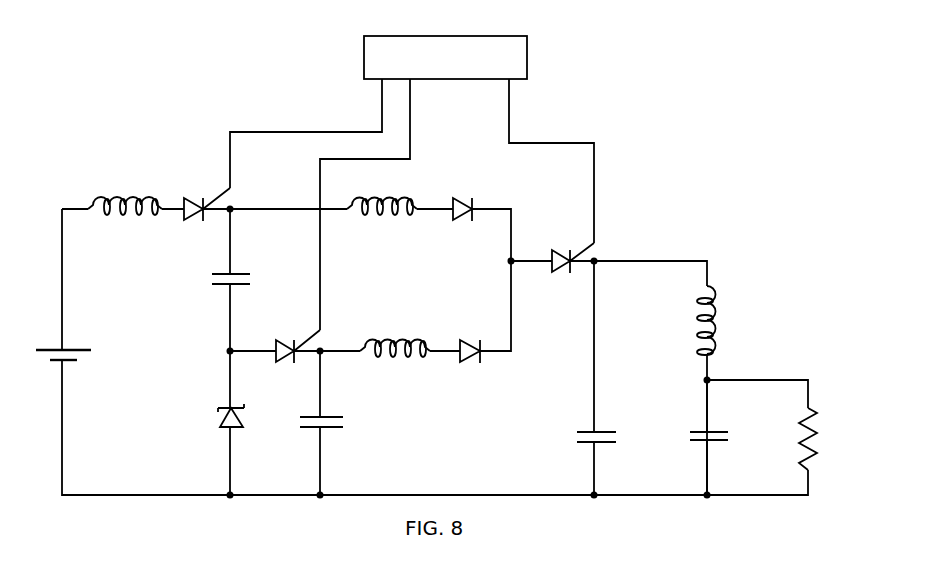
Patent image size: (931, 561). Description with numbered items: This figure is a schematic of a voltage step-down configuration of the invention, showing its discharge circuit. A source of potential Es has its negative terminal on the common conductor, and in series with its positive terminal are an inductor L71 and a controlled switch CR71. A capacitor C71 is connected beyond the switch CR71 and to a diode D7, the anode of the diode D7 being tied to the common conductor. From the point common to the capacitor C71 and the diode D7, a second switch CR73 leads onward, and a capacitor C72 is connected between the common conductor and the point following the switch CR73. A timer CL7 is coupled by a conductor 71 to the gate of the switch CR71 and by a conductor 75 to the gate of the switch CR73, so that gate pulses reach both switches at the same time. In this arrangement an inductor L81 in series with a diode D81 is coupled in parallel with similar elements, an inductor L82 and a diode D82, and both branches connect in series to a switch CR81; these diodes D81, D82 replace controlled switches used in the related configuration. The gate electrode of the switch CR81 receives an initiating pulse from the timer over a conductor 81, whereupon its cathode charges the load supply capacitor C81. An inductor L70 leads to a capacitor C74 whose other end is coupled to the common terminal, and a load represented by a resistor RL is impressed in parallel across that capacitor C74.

The timer CL7 is at (527, 58).
The conductor 71 is at (382, 108).
The conductor 75 is at (410, 119).
The conductor 81 is at (594, 182).
The inductor L71 is at (107, 203).
The switch CR71 is at (200, 221).
The capacitor C71 is at (218, 286).
The source of potential Es is at (81, 356).
The switch CR73 is at (277, 342).
The diode D7 is at (223, 412).
The capacitor C72 is at (333, 430).
The inductor L81 is at (362, 213).
The diode D81 is at (455, 198).
The inductor L82 is at (378, 345).
The diode D82 is at (465, 365).
The switch CR81 is at (561, 274).
The load supply capacitor C81 is at (604, 443).
The inductor L70 is at (718, 313).
The capacitor C74 is at (716, 443).
The load resistor RL is at (802, 420).